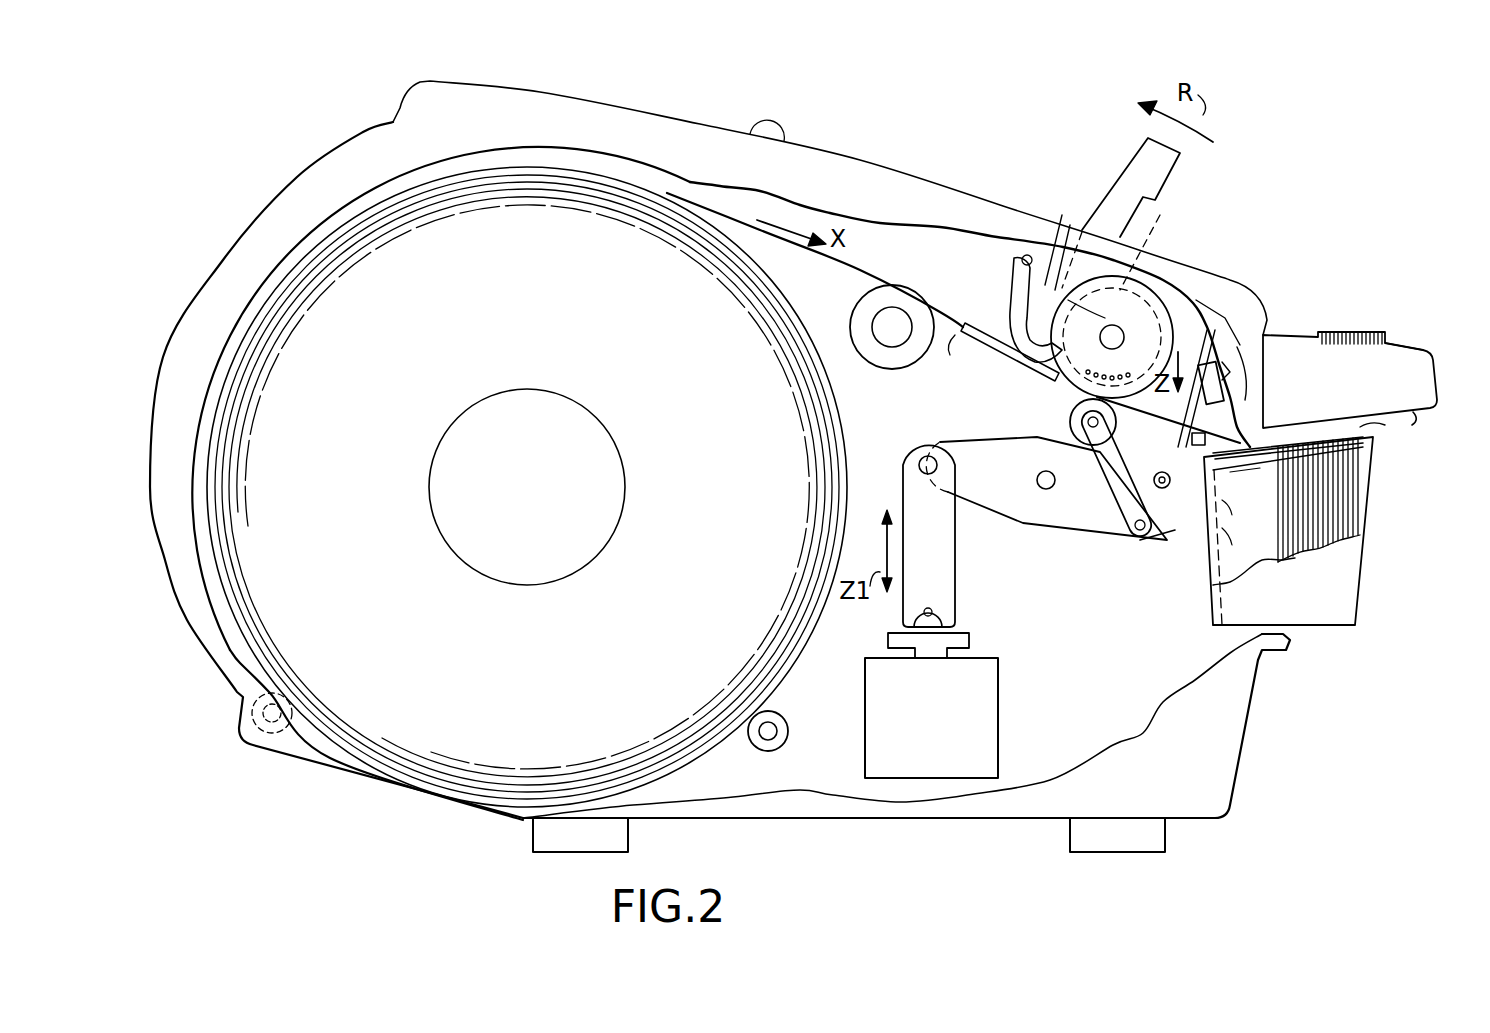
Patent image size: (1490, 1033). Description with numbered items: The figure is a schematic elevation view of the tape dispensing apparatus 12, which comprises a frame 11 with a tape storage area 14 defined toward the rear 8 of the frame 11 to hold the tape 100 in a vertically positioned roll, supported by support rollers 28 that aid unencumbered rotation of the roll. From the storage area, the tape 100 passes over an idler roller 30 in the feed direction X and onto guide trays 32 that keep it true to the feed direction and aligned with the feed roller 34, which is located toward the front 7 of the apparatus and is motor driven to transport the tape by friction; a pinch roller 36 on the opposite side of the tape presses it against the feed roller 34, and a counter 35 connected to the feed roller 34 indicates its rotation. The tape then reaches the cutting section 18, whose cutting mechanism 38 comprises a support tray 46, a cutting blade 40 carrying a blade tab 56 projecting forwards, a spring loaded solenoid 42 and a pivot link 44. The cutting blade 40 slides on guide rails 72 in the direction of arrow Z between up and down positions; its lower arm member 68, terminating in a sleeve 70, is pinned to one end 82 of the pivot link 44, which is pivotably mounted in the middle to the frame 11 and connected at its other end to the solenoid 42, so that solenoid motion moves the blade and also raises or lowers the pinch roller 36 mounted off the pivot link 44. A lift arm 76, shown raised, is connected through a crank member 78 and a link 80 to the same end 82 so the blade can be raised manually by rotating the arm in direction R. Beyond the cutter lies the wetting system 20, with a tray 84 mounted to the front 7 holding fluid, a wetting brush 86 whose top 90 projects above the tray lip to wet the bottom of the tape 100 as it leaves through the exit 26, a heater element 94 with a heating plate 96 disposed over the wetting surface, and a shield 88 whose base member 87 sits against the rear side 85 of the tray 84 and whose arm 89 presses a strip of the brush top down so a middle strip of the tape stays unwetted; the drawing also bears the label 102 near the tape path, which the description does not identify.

The front 7 is at (1175, 290).
The rear 8 is at (258, 203).
The frame 11 is at (1040, 818).
The tape dispensing apparatus 12 is at (680, 108).
The tape storage area 14 is at (252, 270).
The cutting section 18 is at (1205, 305).
The wetting system 20 is at (1330, 613).
The exit 26 is at (1398, 350).
The support rollers 28 is at (290, 735).
The idler rollers 30 is at (893, 369).
The guide trays 32 is at (1005, 348).
The feed roller 34 is at (1160, 300).
The counter 35 is at (1148, 250).
The pinch roller 36 is at (1068, 415).
The cutting mechanism 38 is at (1237, 347).
The cutting blade 40 is at (1222, 362).
The spring loaded solenoid 42 is at (908, 737).
The pivot link 44 is at (979, 479).
The support tray 46 is at (1188, 475).
The blade tab 56 is at (1220, 390).
The lower arm member 68 is at (1190, 470).
The sleeve 70 is at (1150, 482).
The guide rails 72 is at (1145, 535).
The lift arm 76 is at (1122, 178).
The crank member 78 is at (1062, 215).
The link 80 is at (1012, 295).
The end of pivot link 82 is at (1142, 541).
The tray 84 is at (1350, 565).
The rear side of tray 85 is at (1228, 582).
The wetting brush 86 is at (1340, 523).
The base member 87 is at (1242, 515).
The shield 88 is at (1242, 542).
The arm 89 is at (1246, 485).
The top of brush 90 is at (1368, 425).
The heater element 94 is at (1293, 374).
The heating plate 96 is at (1418, 420).
The tape 100 is at (240, 345).
The tape liner 102 is at (1182, 420).